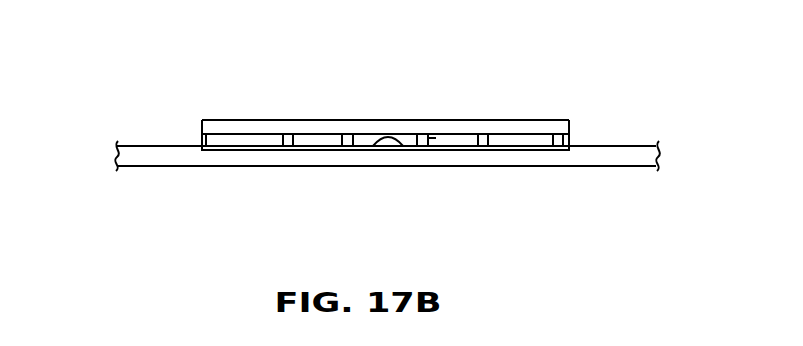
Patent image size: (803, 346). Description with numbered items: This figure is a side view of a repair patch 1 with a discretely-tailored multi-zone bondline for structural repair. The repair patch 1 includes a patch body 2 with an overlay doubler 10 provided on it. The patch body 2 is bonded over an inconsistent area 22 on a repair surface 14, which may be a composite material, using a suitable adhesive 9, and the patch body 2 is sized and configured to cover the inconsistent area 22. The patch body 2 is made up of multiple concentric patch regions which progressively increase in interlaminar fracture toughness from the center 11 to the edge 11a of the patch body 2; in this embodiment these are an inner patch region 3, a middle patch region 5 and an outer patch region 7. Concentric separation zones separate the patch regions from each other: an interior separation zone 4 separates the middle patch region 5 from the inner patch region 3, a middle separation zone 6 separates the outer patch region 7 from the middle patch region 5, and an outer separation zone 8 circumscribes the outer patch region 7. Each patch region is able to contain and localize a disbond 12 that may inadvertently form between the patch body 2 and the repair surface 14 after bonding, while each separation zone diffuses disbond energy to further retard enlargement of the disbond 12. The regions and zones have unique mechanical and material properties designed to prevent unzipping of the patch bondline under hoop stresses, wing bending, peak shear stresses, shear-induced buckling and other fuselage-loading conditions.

The repair patch 1 is at (247, 88).
The patch body 2 is at (193, 135).
The inner patch region 3 is at (404, 140).
The interior separation zone 4 is at (434, 138).
The middle patch region 5 is at (316, 140).
The middle separation zone 6 is at (290, 140).
The outer patch region 7 is at (525, 142).
The outer separation zone 8 is at (217, 140).
The adhesive 9 is at (507, 140).
The overlay doubler 10 is at (480, 134).
The center 11 is at (384, 134).
The edge 11a is at (571, 127).
The disbond 12 is at (387, 150).
The repair surface 14 is at (618, 146).
The inconsistent area 22 is at (365, 148).